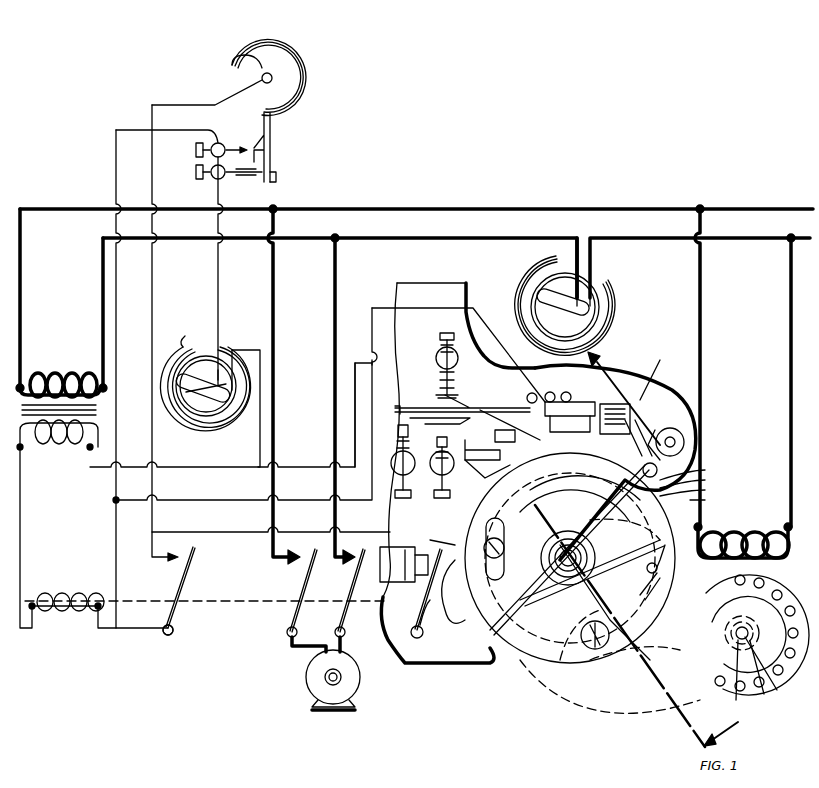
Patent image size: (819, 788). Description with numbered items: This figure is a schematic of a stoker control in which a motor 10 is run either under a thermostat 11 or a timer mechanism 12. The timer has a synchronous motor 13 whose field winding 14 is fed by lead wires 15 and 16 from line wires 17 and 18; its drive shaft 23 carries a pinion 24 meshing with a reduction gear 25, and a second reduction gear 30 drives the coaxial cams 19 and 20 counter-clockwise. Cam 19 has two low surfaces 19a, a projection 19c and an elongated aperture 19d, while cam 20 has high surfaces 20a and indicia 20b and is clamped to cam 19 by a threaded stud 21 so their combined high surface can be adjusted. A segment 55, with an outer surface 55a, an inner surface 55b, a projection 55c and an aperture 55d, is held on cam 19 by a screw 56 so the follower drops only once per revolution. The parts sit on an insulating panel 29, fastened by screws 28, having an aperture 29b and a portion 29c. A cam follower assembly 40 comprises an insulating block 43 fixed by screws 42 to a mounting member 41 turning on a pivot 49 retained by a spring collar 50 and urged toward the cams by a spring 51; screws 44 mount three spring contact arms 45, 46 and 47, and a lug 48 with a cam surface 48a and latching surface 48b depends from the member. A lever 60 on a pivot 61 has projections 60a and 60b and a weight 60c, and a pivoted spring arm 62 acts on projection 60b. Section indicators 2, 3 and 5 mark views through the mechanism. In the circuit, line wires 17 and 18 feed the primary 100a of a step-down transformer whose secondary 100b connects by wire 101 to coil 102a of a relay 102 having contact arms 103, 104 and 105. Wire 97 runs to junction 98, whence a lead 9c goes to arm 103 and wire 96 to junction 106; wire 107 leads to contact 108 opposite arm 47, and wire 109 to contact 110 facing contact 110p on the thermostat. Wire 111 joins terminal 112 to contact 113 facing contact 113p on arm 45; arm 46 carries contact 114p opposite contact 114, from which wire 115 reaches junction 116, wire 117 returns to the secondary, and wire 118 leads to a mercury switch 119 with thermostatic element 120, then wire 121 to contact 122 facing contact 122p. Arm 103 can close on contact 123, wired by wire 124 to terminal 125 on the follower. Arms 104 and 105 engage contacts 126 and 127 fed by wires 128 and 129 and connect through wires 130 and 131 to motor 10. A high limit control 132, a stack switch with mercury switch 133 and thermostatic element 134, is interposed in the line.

The section line 2 is at (636, 556).
The contact segment 3 is at (564, 487).
The contact segment 5 is at (588, 490).
The pivot 9c is at (156, 634).
The motor 10 is at (364, 682).
The thermostat 11 is at (305, 72).
The timer mechanism 12 is at (505, 670).
The motor 13 is at (770, 612).
The field winding 14 is at (772, 530).
The lead wire 15 is at (701, 300).
The lead wire 16 is at (788, 296).
The line wire 17 is at (654, 208).
The line wire 18 is at (662, 240).
The cam 19 is at (498, 660).
The low surfaces 19a is at (486, 502).
The projection 19c is at (430, 518).
The elongated aperture 19d is at (706, 504).
The cam 20 is at (670, 590).
The high surfaces 20a is at (470, 540).
The indicia 20b is at (625, 529).
The stud 21 is at (500, 620).
The drive shaft 23 is at (768, 668).
The pinion 24 is at (738, 692).
The reduction gear 25 is at (650, 716).
The screws 28 is at (18, 405).
The insulating panel 29 is at (462, 285).
The aperture 29b is at (404, 555).
The frame part 29c is at (508, 435).
The second reduction gear 30 is at (610, 686).
The cam follower assembly 40 is at (570, 398).
The mounting member 41 is at (663, 378).
The screws 42 is at (645, 380).
The block 43 is at (613, 411).
The screws 44 is at (572, 390).
The spring contact arm 45 is at (462, 400).
The spring contact arm 46 is at (430, 408).
The spring contact arm 47 is at (440, 419).
The lug 48 is at (500, 412).
The cam surface 48a is at (495, 478).
The latching surface 48b is at (474, 447).
The pivot 49 is at (680, 432).
The spring collar 50 is at (685, 440).
The spring 51 is at (695, 462).
The segment 55 is at (612, 604).
The surface 55a is at (620, 650).
The surface 55b is at (667, 671).
The projection 55c is at (744, 599).
The aperture 55d is at (672, 620).
The securing screw 56 is at (612, 620).
The lever 60 is at (448, 625).
The projection 60a is at (495, 469).
The projection 60b is at (435, 536).
The weight 60c is at (562, 528).
The pivot 61 is at (454, 655).
The spring arm 62 is at (400, 610).
The wire 96 is at (114, 551).
The wire 97 is at (104, 632).
The junction 98 is at (116, 634).
The primary 100a is at (40, 374).
The secondary 100b is at (36, 450).
The wire 101 is at (22, 548).
The relay 102 is at (78, 620).
The coil 102a is at (62, 594).
The contact arm 103 is at (188, 590).
The contact arm 104 is at (308, 576).
The contact arm 105 is at (356, 582).
The junction 106 is at (114, 500).
The wire 107 is at (228, 500).
The contact 108 is at (440, 424).
The wire 109 is at (138, 334).
The contact 110 is at (222, 135).
The contact 110p is at (252, 140).
The wire 111 is at (206, 102).
The terminal 112 is at (267, 65).
The contact 113 is at (436, 388).
The contact 113p is at (452, 392).
The contact 114 is at (396, 457).
The contact 114p is at (398, 415).
The wire 115 is at (288, 466).
The junction 116 is at (256, 466).
The wire 117 is at (206, 466).
The wire 118 is at (246, 348).
The mercury switch 119 is at (196, 405).
The thermostatic element 120 is at (192, 348).
The wire 121 is at (216, 302).
The contact 122 is at (236, 184).
The contact 122p is at (268, 182).
The contact 123 is at (177, 584).
The wire 124 is at (392, 282).
The terminal 125 is at (545, 385).
The contact 126 is at (262, 577).
The contact 127 is at (329, 577).
The wire 128 is at (276, 346).
The wire 129 is at (338, 312).
The wire 130 is at (298, 650).
The wire 131 is at (342, 646).
The high limit control 132 is at (612, 282).
The mercury switch 133 is at (590, 310).
The thermostatic element 134 is at (548, 262).